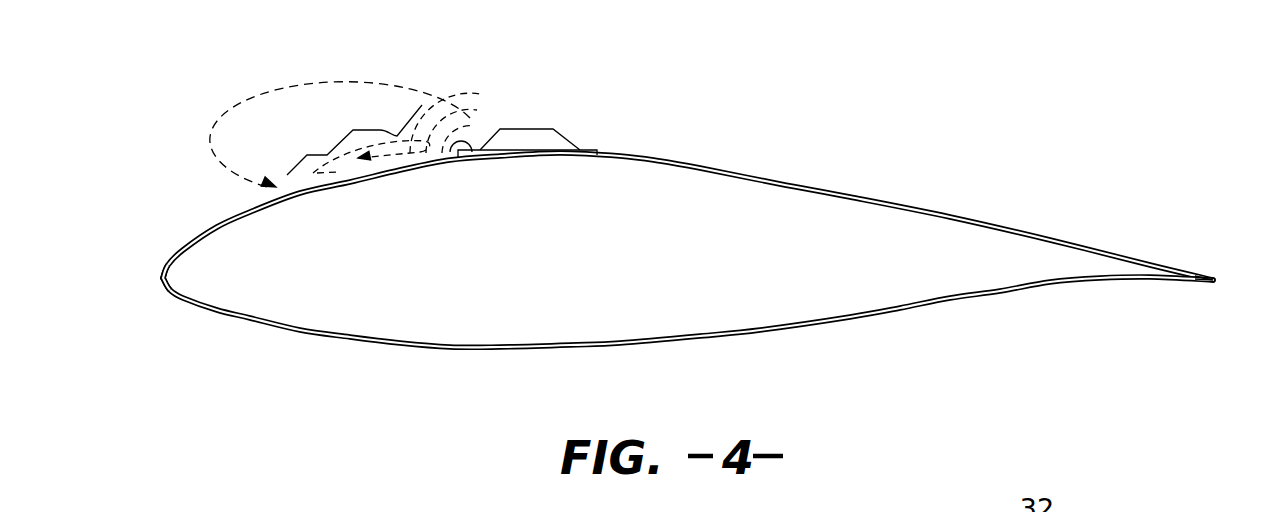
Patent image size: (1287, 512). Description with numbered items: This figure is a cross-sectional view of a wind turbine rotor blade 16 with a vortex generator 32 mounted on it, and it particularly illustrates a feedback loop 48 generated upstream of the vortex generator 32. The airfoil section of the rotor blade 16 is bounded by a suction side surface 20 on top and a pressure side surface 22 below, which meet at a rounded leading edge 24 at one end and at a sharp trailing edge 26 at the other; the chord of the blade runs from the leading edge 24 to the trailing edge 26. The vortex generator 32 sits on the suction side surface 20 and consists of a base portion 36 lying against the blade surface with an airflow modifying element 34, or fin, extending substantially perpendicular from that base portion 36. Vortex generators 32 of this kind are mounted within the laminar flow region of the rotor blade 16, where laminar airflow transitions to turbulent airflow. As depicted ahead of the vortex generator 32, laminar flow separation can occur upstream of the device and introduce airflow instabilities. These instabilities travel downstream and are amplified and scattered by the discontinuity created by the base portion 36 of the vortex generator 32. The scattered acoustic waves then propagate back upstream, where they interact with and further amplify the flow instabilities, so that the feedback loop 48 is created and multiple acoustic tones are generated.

The rotor blade 16 is at (683, 260).
The suction side surface 20 is at (753, 178).
The pressure side surface 22 is at (570, 350).
The leading edge 24 is at (161, 278).
The trailing edge 26 is at (1213, 280).
The vortex generator 32 is at (536, 103).
The airflow modifying element 34 is at (543, 108).
The base portion 36 is at (588, 148).
The feedback loop 48 is at (257, 103).